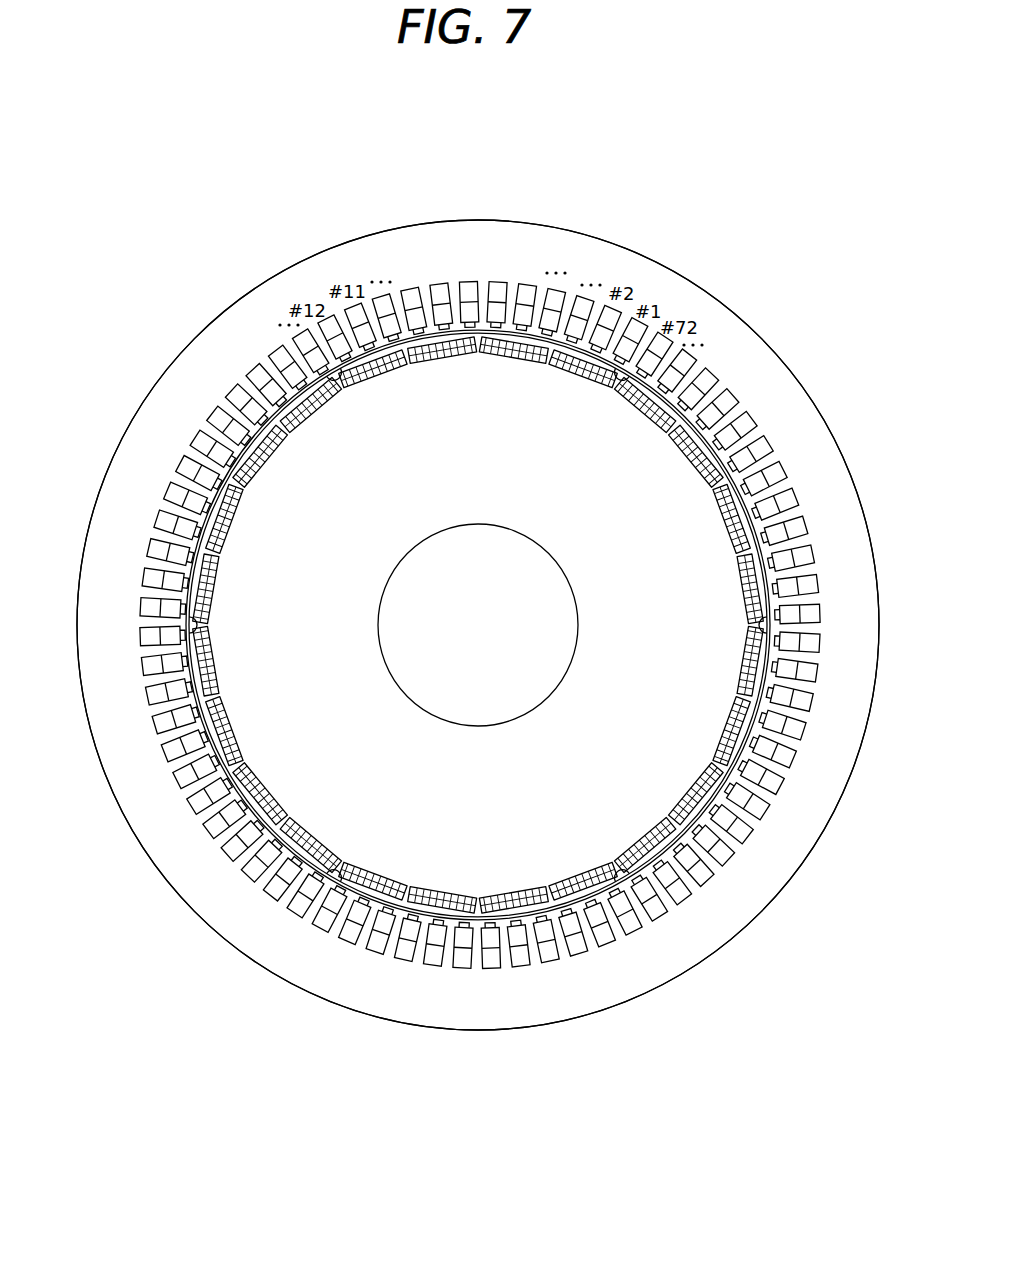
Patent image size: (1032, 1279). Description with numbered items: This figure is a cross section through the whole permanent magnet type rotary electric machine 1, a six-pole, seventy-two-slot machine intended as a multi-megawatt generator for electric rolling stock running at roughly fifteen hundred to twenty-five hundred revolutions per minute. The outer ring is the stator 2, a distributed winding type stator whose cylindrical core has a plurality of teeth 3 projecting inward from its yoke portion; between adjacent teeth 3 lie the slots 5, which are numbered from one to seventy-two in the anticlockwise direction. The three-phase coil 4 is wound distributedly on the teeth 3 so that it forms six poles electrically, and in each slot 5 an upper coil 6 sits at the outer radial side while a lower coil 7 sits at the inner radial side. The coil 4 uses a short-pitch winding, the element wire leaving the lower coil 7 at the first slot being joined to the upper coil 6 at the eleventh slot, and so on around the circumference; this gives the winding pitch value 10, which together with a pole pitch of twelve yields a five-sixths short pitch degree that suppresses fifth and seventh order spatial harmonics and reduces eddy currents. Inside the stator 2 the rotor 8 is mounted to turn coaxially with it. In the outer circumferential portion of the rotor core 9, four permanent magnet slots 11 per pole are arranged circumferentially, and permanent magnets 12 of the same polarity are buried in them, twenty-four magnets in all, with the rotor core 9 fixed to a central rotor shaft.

The permanent magnet type rotary electric machine 1 is at (634, 208).
The stator 2 is at (735, 358).
The teeth 3 is at (745, 477).
The coil 4 is at (443, 221).
The slot 5 is at (270, 350).
The upper coil 6 is at (469, 297).
The lower coil 7 is at (442, 315).
The rotor 8 is at (727, 803).
The rotor core 9 is at (613, 778).
The winding pitch value 10 is at (465, 680).
The permanent magnet slots 11 is at (252, 787).
The permanent magnets 12 is at (277, 852).